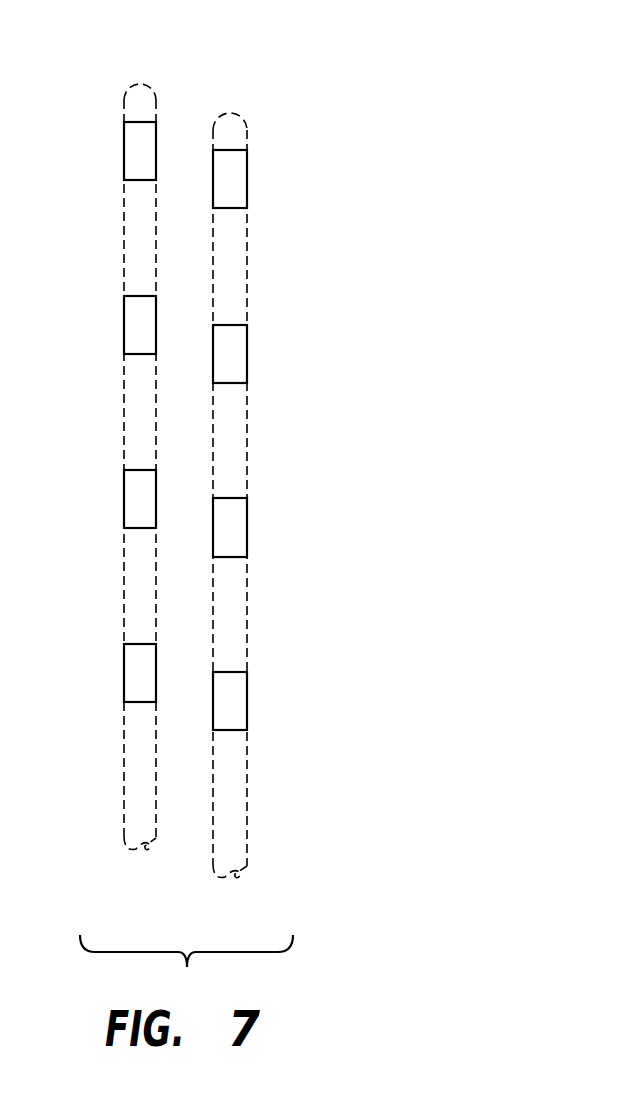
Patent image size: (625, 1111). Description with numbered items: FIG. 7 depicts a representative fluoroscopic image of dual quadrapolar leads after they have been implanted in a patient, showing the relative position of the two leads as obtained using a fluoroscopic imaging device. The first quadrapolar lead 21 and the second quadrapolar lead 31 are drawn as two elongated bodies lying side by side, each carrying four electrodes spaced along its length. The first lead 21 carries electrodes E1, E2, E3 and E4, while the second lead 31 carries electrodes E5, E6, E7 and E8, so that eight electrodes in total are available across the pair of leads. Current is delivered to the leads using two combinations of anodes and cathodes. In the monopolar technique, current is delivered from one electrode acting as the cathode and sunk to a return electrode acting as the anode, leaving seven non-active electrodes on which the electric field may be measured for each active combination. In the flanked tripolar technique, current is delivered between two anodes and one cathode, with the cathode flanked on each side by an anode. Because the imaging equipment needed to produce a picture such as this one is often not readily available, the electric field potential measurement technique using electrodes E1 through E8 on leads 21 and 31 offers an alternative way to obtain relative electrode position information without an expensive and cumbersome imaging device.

The quadrapolar lead 21 is at (133, 80).
The quadrapolar lead 31 is at (236, 110).
The electrode E1 is at (119, 151).
The electrode E2 is at (119, 325).
The electrode E3 is at (119, 499).
The electrode E4 is at (119, 673).
The electrode E5 is at (253, 179).
The electrode E6 is at (253, 354).
The electrode E7 is at (253, 527).
The electrode E8 is at (253, 701).